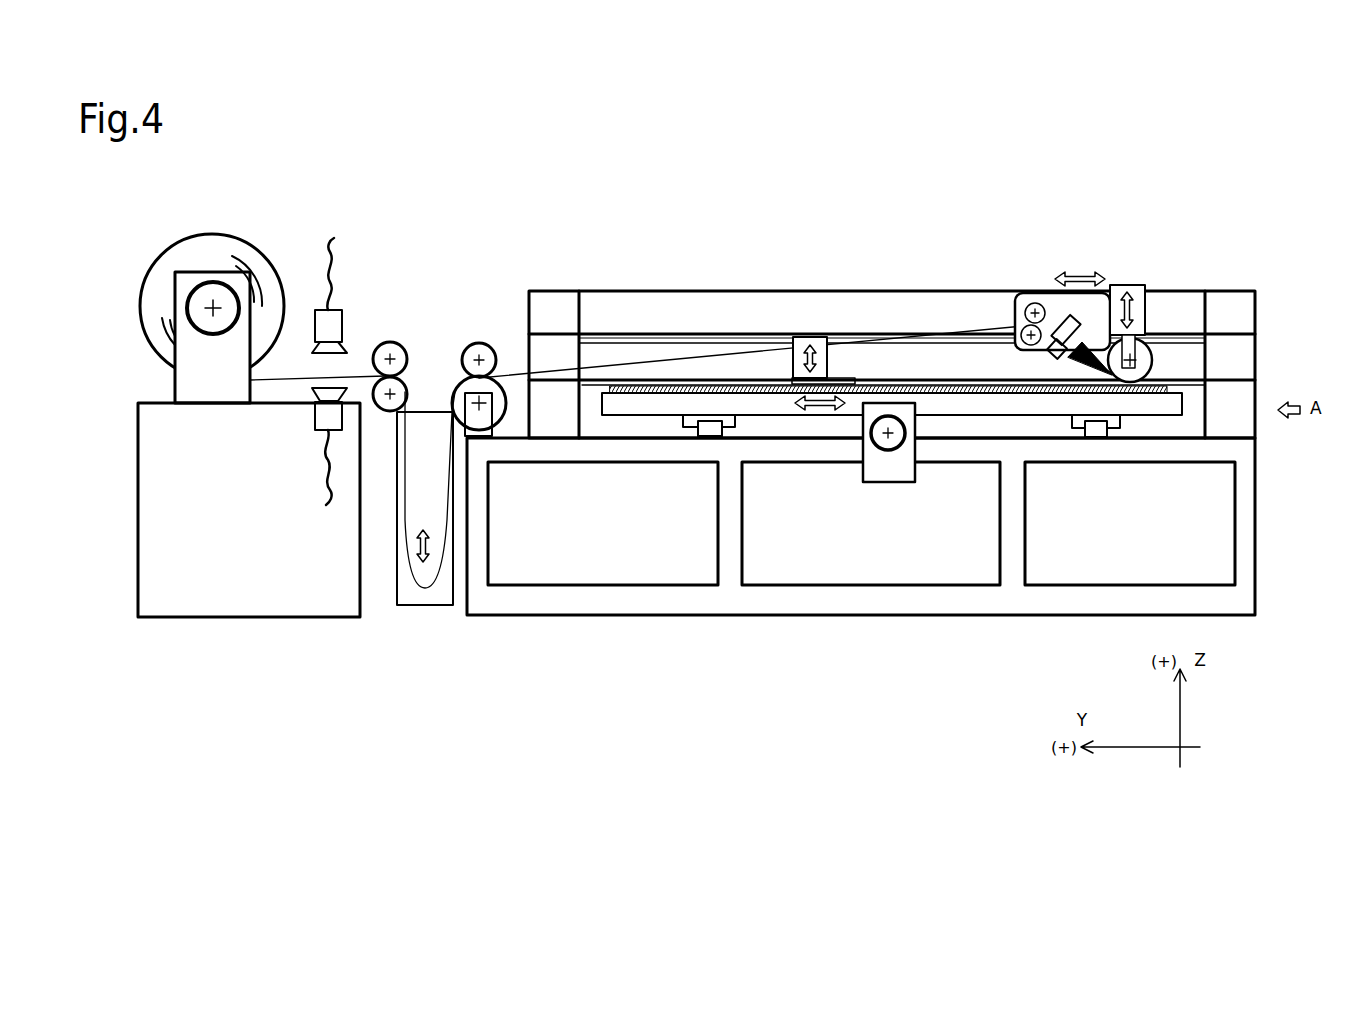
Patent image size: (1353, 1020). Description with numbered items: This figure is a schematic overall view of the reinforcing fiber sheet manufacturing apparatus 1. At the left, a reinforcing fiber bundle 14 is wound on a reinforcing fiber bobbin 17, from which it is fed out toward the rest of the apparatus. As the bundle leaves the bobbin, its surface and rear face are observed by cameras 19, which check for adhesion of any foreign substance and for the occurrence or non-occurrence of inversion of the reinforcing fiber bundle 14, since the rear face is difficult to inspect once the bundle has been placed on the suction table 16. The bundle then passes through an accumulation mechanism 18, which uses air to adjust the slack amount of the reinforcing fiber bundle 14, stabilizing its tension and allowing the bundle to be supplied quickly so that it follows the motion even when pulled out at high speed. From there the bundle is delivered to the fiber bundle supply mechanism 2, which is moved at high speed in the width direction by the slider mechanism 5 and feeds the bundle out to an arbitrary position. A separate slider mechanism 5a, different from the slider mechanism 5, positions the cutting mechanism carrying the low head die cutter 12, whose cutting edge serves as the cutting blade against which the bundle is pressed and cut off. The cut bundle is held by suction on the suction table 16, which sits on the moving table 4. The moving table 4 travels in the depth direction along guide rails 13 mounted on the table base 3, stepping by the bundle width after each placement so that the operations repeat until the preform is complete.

The reinforcing fiber sheet manufacturing apparatus 1 is at (1152, 257).
The fiber bundle supply mechanism 2 is at (1047, 290).
The table base 3 is at (798, 450).
The moving table 4 is at (637, 405).
The slider mechanism 5 is at (925, 300).
The another slider mechanism 5a is at (640, 352).
The low head die cutter 12 is at (845, 368).
The guide rails 13 is at (1097, 438).
The reinforcing fiber bundle 14 is at (962, 330).
The suction table 16 is at (1160, 387).
The reinforcing fiber bobbin 17 is at (237, 237).
The accumulation mechanism 18 is at (422, 607).
The camera 19 is at (342, 323).